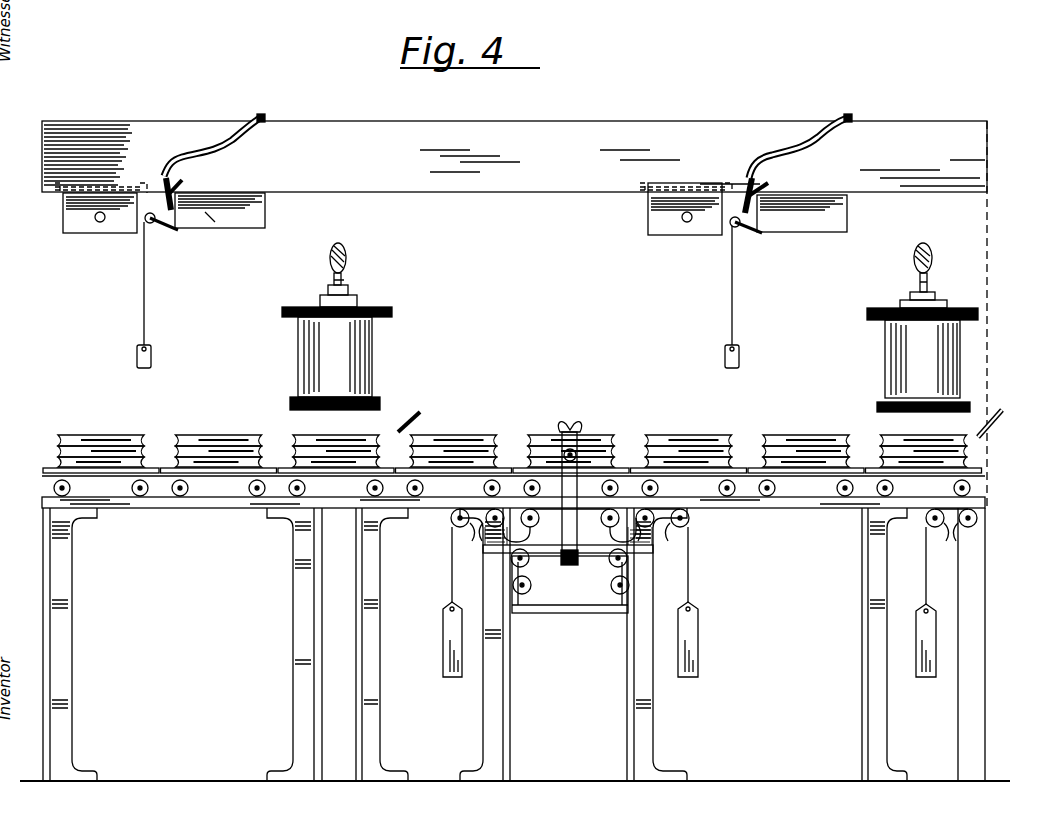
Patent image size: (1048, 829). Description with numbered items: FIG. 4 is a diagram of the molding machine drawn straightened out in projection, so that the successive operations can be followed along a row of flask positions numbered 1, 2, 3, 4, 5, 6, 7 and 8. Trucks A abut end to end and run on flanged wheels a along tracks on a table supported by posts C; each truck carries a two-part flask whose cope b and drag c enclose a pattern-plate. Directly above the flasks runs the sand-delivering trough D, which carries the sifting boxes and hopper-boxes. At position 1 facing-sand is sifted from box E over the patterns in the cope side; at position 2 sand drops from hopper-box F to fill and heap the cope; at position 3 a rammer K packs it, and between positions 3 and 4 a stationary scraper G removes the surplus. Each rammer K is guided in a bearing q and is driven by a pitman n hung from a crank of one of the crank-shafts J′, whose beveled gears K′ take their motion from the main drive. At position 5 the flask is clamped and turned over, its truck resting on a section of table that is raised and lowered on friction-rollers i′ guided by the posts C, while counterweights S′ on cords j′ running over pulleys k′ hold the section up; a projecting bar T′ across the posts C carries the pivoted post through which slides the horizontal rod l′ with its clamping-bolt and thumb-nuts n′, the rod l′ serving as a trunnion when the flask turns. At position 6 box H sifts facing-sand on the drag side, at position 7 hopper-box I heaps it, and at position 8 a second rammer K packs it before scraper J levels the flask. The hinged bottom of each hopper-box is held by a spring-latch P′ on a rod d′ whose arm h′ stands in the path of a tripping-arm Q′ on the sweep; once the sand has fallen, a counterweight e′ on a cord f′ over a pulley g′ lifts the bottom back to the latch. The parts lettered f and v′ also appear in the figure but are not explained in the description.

The trucks A is at (42, 490).
The posts C is at (862, 588).
The sand-delivering trough D is at (514, 315).
The sand-sifting box E is at (105, 233).
The hopper-box F is at (240, 228).
The stationary scraper G is at (420, 414).
The sand-sifting box H is at (684, 221).
The hopper-box I is at (790, 232).
The stationary scraper J is at (1002, 408).
The rammer K is at (860, 400).
The flanged wheels a is at (910, 489).
The cope b is at (880, 464).
The drag c is at (880, 436).
The rod d′ is at (790, 178).
The counterweight e′ is at (750, 350).
The hanging rod f is at (144, 293).
The cord f′ is at (732, 315).
The pulley g′ is at (752, 248).
The arm h′ is at (750, 182).
The friction-rollers i′ is at (600, 578).
The cords j′ is at (688, 575).
The pulleys k′ is at (945, 546).
The sliding horizontal rod l′ is at (562, 440).
The pitman n is at (918, 280).
The thumb-nuts n′ is at (566, 428).
The bearing q is at (885, 345).
The pivot pin v′ is at (575, 452).
The crank-shafts J′ is at (944, 246).
The beveled gears K′ is at (553, 615).
The spring-latch P′ is at (772, 260).
The tripping-arm Q′ is at (800, 150).
The counterweights S′ is at (916, 637).
The projecting bar T′ is at (590, 553).
The position 1 is at (109, 413).
The position 2 is at (226, 419).
The position 3 is at (342, 421).
The position 4 is at (461, 421).
The position 5 is at (599, 419).
The position 6 is at (691, 419).
The position 7 is at (808, 419).
The position 8 is at (926, 421).